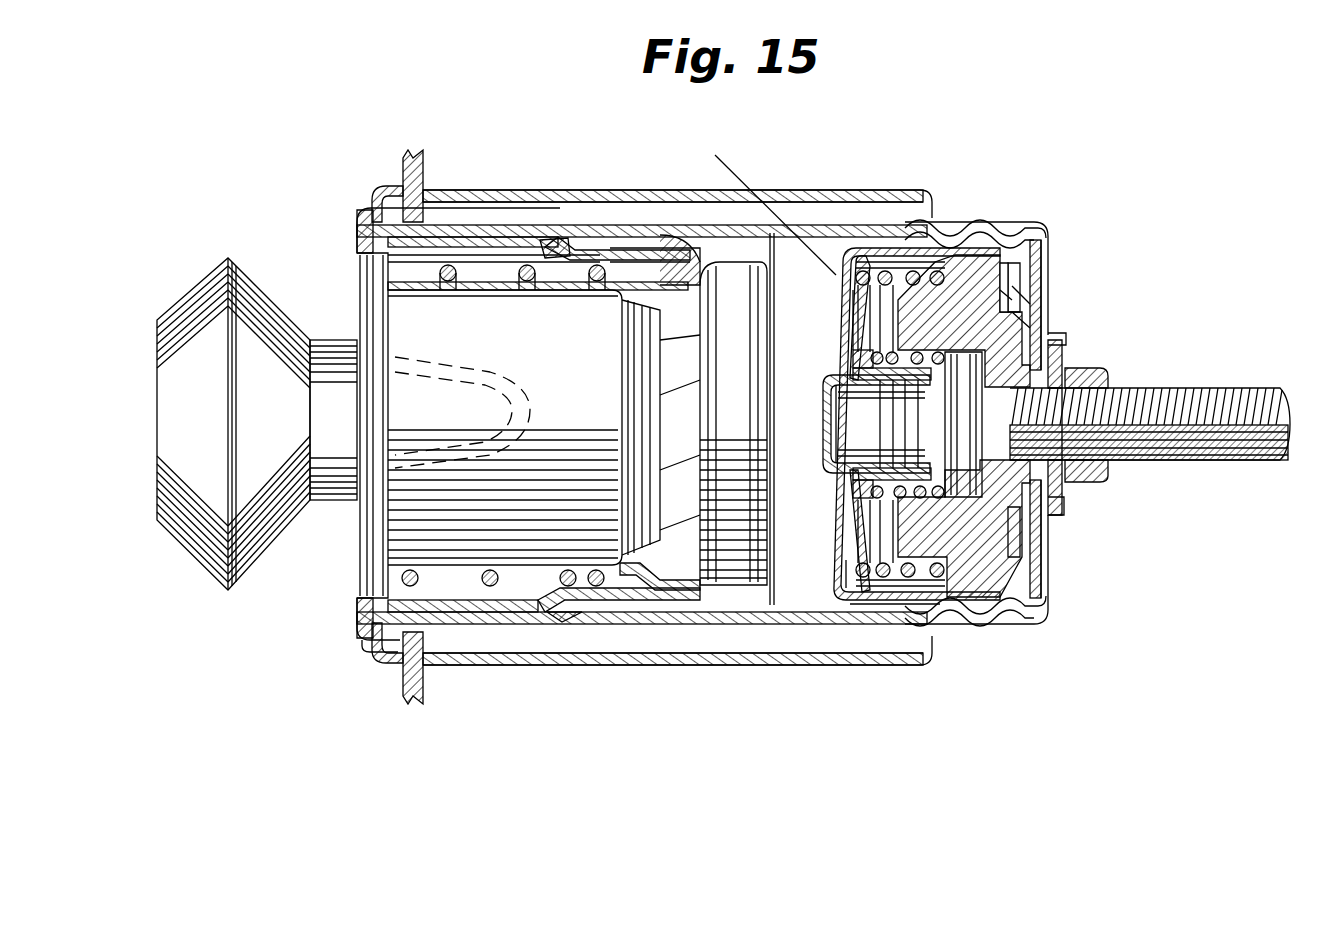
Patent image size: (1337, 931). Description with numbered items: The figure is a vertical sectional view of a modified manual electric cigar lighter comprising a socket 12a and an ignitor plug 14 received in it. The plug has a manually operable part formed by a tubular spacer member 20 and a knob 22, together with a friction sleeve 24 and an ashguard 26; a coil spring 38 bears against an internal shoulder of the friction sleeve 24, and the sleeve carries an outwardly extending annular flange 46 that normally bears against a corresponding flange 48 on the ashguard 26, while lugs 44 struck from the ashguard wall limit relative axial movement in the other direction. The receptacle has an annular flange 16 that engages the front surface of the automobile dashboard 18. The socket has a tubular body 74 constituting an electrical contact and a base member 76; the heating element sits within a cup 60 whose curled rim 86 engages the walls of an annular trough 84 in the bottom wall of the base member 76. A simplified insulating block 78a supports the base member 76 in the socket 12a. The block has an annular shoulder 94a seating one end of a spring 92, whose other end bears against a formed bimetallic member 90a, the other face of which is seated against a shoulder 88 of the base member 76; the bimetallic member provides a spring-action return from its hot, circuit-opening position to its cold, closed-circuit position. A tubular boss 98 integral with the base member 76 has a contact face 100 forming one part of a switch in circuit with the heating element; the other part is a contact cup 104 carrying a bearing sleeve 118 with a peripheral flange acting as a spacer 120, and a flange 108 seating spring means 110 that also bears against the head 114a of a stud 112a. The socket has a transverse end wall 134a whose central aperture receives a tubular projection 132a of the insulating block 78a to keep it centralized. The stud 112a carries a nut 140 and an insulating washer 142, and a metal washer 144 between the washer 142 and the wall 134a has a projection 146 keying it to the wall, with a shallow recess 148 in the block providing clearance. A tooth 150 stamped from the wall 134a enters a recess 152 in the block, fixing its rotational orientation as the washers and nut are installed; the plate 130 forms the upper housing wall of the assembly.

The socket 12a is at (992, 650).
The ignitor plug 14 is at (340, 597).
The annular flange 16 is at (388, 192).
The automobile dashboard 18 is at (398, 700).
The tubular spacer member 20 is at (565, 358).
The knob 22 is at (162, 462).
The friction sleeve 24 is at (432, 628).
The ashguard 26 is at (626, 622).
The coil spring 38 is at (452, 266).
The lugs 44 is at (570, 625).
The annular flange 46 is at (355, 636).
The flange 48 is at (366, 650).
The cup 60 is at (762, 340).
The tubular body 74 is at (782, 640).
The base member 76 is at (845, 635).
The insulating block 78a is at (985, 328).
The annular trough 84 is at (840, 574).
The curled rim 86 is at (776, 498).
The shoulder 88 is at (858, 262).
The bimetallic member 90a is at (852, 338).
The spring 92 is at (918, 262).
The annular shoulder 94a is at (958, 222).
The tubular boss 98 is at (870, 470).
The contact face 100 is at (932, 402).
The contact cup 104 is at (902, 470).
The flange 108 is at (850, 378).
The spring means 110 is at (882, 600).
The stud 112a is at (1205, 382).
The head 114a is at (1058, 372).
The bearing sleeve 118 is at (838, 404).
The spacer 120 is at (838, 472).
The upper plate 130 is at (792, 190).
The tubular projection 132a is at (1066, 500).
The transverse end wall 134a is at (1050, 586).
The nut 140 is at (1100, 380).
The insulating washer 142 is at (1066, 348).
The metal washer 144 is at (1050, 572).
The projection 146 is at (1042, 536).
The shallow recess 148 is at (1040, 612).
The tooth 150 is at (1020, 300).
The recess 152 is at (1012, 262).